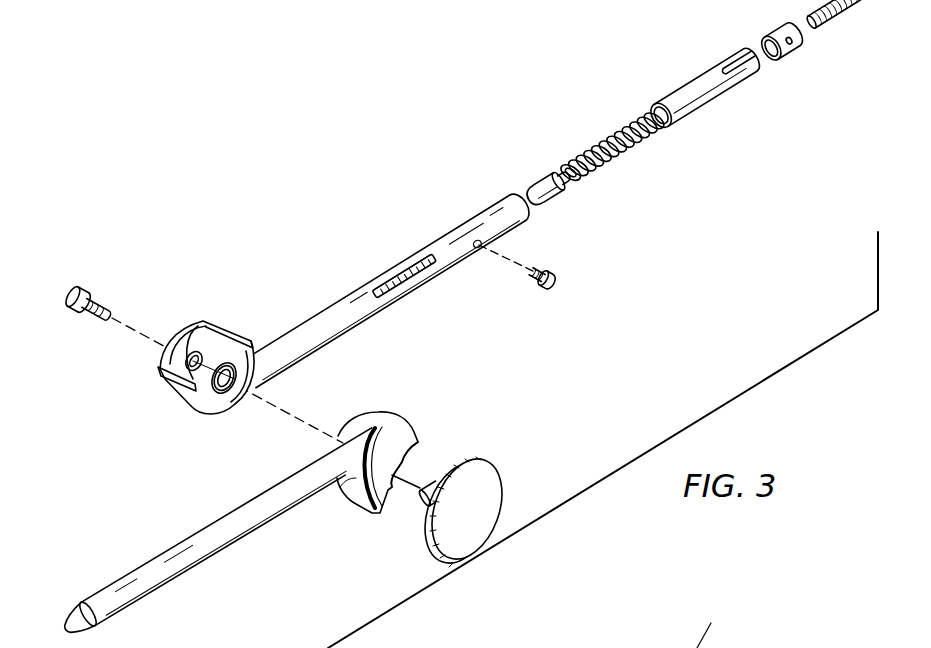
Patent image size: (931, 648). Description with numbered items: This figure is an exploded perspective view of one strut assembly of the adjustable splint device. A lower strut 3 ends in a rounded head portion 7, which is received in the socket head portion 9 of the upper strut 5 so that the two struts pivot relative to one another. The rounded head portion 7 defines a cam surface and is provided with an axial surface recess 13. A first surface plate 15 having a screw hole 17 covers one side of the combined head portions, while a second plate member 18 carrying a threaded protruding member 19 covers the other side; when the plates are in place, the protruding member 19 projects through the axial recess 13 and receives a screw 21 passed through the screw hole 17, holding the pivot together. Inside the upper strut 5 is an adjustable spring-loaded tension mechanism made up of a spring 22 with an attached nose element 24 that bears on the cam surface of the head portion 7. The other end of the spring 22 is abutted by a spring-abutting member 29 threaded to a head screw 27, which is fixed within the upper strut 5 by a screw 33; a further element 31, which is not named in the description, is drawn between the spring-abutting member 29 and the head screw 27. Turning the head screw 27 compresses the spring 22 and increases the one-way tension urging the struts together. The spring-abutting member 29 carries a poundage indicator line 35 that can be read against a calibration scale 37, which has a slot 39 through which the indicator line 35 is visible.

The lower strut 3 is at (207, 542).
The upper strut 5 is at (323, 332).
The rounded head portion 7 is at (348, 486).
The socket head portion 9 is at (221, 332).
The axial surface recess 13 is at (413, 465).
The first surface plate 15 is at (178, 362).
The screw hole 17 is at (190, 353).
The second plate member 18 is at (482, 493).
The threaded protruding member 19 is at (426, 503).
The screw 21 is at (99, 294).
The spring 22 is at (593, 147).
The nose element 24 is at (540, 183).
The head screw 27 is at (855, 3).
The spring-abutting member 29 is at (683, 97).
The bushing 31 is at (772, 25).
The screw 33 is at (554, 277).
The poundage indicator line 35 is at (727, 62).
The calibration scale 37 is at (430, 262).
The slot 39 is at (392, 288).